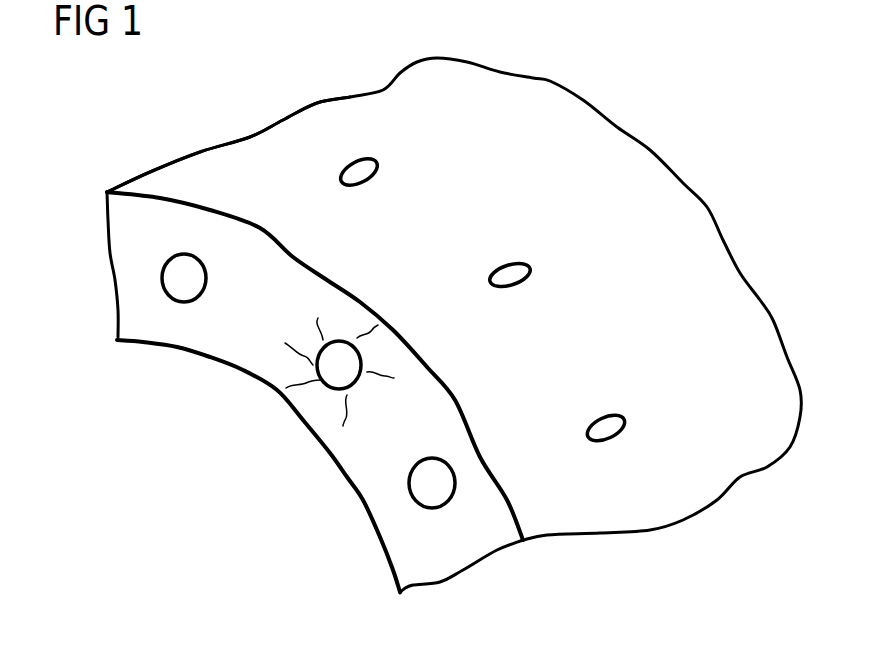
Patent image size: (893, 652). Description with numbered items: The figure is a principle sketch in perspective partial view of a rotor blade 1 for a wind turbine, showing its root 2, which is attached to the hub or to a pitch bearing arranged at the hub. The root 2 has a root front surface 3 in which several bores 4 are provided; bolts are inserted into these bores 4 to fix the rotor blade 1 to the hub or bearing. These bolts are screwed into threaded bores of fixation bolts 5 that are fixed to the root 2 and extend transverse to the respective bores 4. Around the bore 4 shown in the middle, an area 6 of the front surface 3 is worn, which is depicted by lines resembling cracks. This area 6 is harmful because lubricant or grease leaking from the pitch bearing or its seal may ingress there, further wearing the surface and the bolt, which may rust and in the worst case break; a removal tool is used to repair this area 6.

The rotor blade 1 is at (696, 144).
The root 2 is at (275, 147).
The root front surface 3 is at (218, 348).
The bores 4 is at (162, 275).
The fixation bolts 5 is at (377, 165).
The area 6 is at (343, 317).